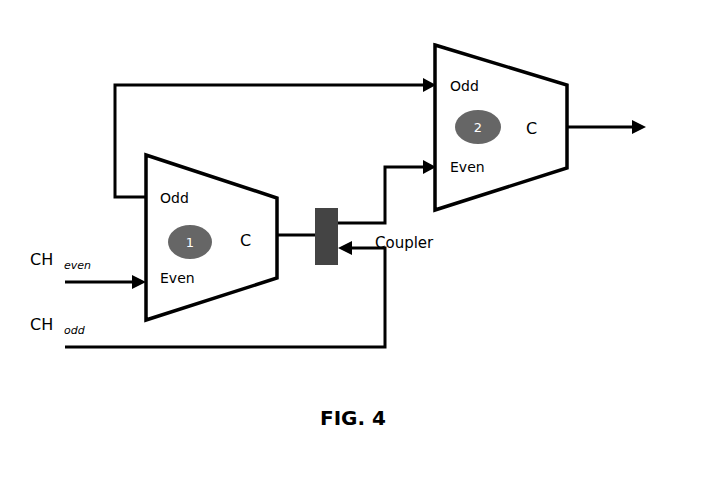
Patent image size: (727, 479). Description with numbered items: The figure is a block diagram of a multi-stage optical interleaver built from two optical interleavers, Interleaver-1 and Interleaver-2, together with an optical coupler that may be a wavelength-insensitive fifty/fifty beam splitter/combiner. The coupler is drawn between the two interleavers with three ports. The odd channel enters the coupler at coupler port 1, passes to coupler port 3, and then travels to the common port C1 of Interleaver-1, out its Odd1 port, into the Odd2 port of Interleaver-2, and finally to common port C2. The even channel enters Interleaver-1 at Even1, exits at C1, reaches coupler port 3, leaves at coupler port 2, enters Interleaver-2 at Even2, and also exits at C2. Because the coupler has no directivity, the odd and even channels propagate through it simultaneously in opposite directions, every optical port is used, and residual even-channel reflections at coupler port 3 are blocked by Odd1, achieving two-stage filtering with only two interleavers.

The coupler port 1 is at (225, 294).
The coupler port 2 is at (387, 191).
The coupler port 3 is at (296, 222).